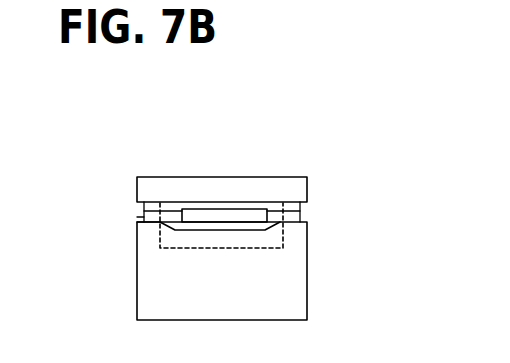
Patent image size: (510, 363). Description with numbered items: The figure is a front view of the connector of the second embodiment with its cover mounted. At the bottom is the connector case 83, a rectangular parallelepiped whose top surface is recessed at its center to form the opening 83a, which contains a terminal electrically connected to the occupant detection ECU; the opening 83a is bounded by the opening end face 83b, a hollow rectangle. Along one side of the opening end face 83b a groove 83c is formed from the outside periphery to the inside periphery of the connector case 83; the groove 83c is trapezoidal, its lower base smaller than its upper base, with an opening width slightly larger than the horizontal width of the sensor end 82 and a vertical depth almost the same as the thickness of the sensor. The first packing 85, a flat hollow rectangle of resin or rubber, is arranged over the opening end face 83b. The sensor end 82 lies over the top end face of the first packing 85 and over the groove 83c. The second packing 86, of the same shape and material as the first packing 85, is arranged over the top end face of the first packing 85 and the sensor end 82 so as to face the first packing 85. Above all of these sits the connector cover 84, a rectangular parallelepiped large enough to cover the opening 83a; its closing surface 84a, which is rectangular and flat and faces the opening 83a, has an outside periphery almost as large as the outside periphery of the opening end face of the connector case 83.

The sensor end 82 is at (220, 208).
The connector case 83 is at (307, 305).
The opening 83a is at (297, 237).
The opening end face 83b is at (304, 217).
The groove 83c is at (160, 222).
The connector cover 84 is at (272, 177).
The closing surface 84a is at (302, 208).
The first packing 85 is at (137, 218).
The second packing 86 is at (137, 207).